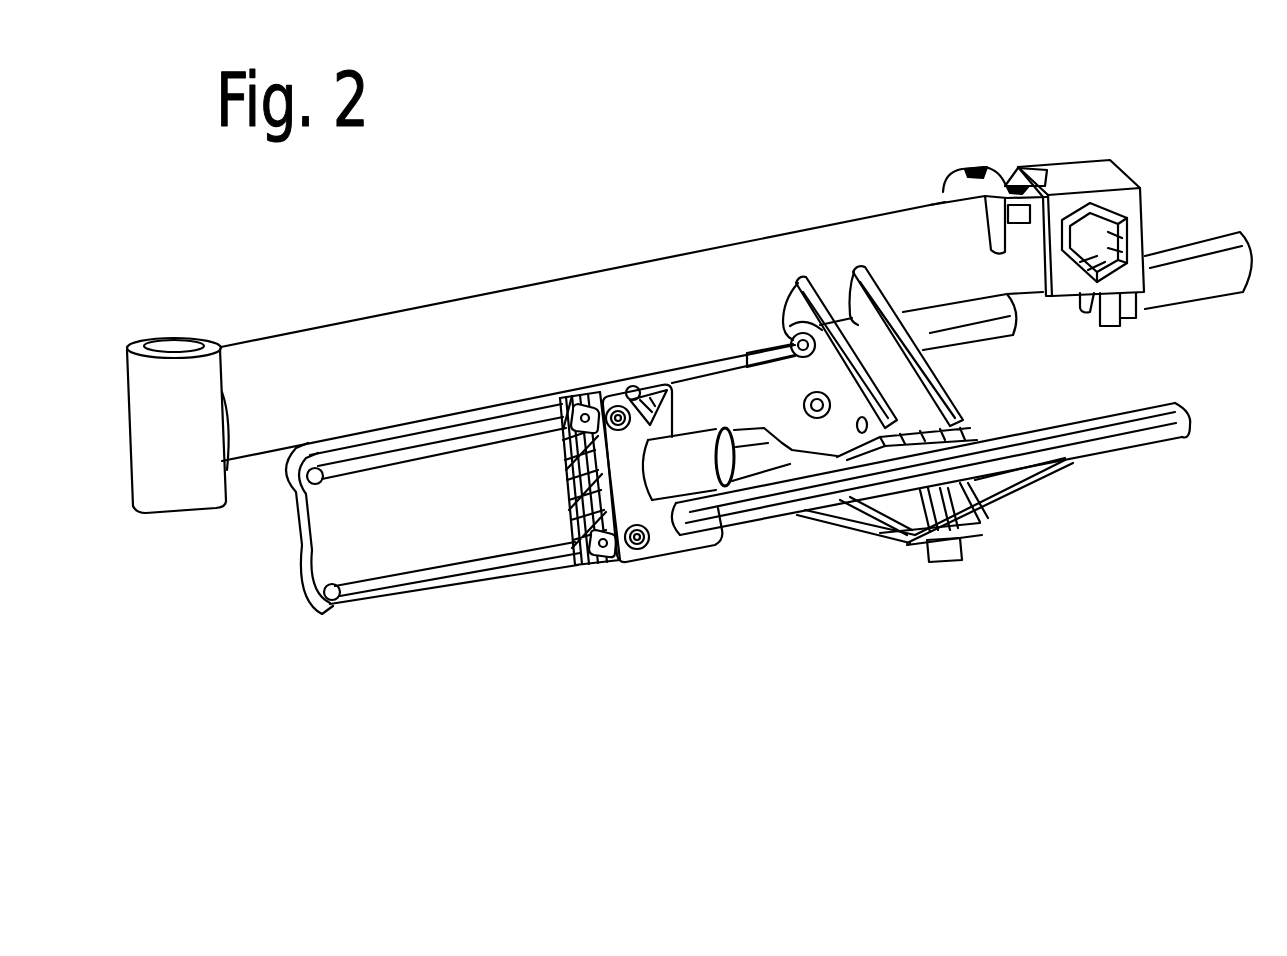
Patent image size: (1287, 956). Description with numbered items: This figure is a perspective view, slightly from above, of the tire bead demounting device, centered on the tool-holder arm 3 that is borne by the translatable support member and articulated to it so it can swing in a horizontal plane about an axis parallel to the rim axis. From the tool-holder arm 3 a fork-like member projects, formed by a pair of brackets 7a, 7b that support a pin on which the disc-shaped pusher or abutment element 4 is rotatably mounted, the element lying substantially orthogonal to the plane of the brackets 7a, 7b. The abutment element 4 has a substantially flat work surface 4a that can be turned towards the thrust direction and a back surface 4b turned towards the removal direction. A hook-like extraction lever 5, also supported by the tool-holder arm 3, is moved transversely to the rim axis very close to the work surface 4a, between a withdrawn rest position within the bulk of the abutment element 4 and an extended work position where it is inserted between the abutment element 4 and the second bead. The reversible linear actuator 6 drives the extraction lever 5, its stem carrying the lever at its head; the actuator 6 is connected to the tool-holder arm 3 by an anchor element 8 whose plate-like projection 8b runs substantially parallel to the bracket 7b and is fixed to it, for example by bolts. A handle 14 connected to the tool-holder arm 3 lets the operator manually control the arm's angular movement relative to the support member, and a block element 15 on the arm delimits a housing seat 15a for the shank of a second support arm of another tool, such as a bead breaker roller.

The tool-holder arm 3 is at (447, 301).
The abutment element 4 is at (968, 439).
The work surface 4a is at (1112, 415).
The back surface 4b is at (1108, 455).
The extraction lever 5 is at (855, 448).
The actuator 6 is at (463, 590).
The bracket 7a is at (878, 268).
The bracket 7b is at (798, 283).
The anchor element 8 is at (664, 557).
The plate-like projection 8b is at (745, 360).
The handle 14 is at (1197, 240).
The block element 15 is at (1092, 194).
The housing seat 15a is at (1088, 215).